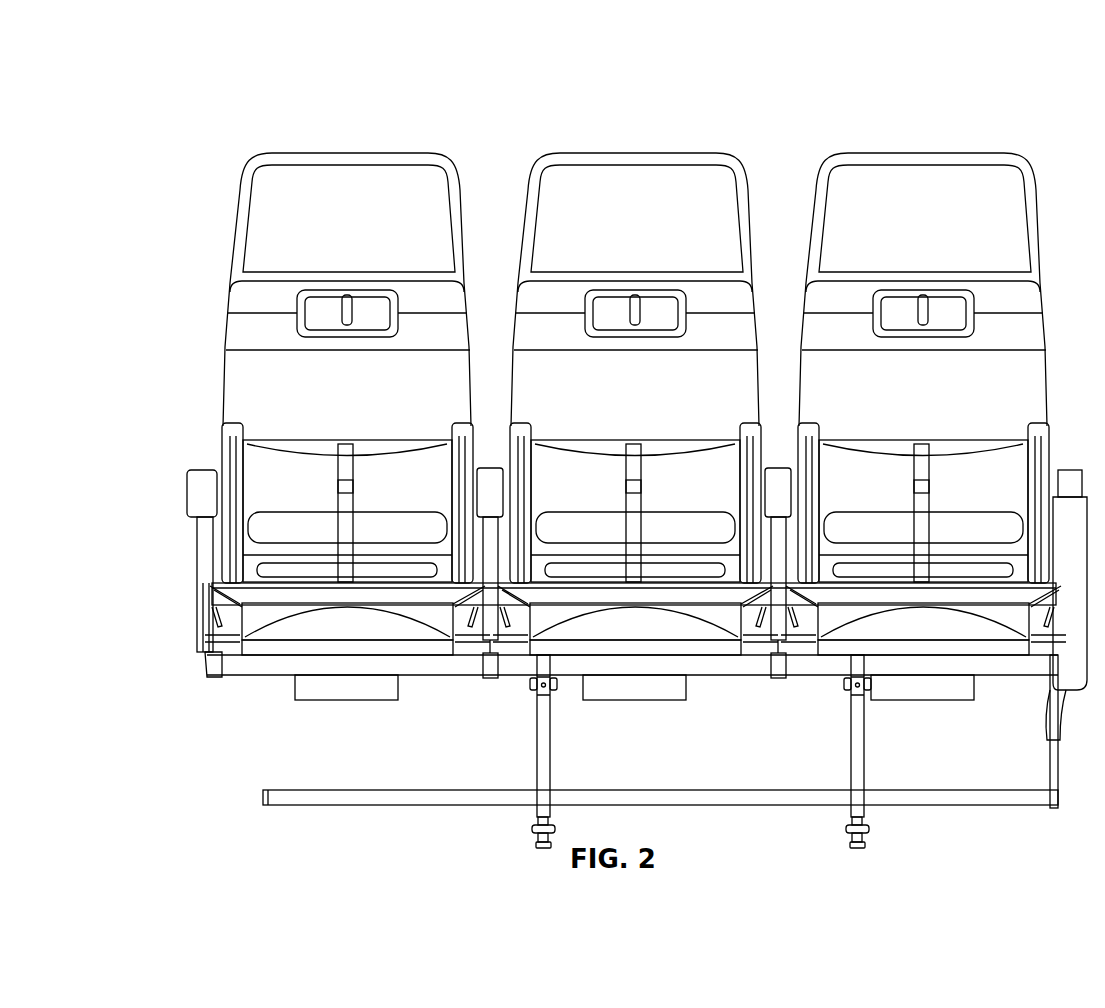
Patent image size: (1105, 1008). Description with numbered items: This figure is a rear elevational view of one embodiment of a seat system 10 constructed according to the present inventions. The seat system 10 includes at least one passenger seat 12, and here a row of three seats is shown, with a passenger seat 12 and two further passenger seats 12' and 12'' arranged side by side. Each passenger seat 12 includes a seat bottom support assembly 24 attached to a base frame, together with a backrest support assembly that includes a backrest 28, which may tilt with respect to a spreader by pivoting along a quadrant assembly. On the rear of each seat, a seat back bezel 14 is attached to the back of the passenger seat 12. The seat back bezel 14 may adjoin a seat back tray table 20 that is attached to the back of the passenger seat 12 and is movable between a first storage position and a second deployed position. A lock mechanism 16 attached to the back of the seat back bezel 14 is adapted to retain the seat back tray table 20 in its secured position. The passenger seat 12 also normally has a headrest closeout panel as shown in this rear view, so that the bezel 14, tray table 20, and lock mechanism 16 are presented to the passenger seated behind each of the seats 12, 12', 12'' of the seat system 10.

The seat system 10 is at (183, 143).
The passenger seat 12 is at (277, 380).
The passenger seat 12' is at (650, 379).
The passenger seat 12'' is at (942, 408).
The seat back bezel 14 is at (240, 260).
The lock mechanism 16 is at (340, 318).
The seat back tray table 20 is at (318, 393).
The seat bottom support assembly 24 is at (267, 630).
The backrest 28 is at (290, 538).